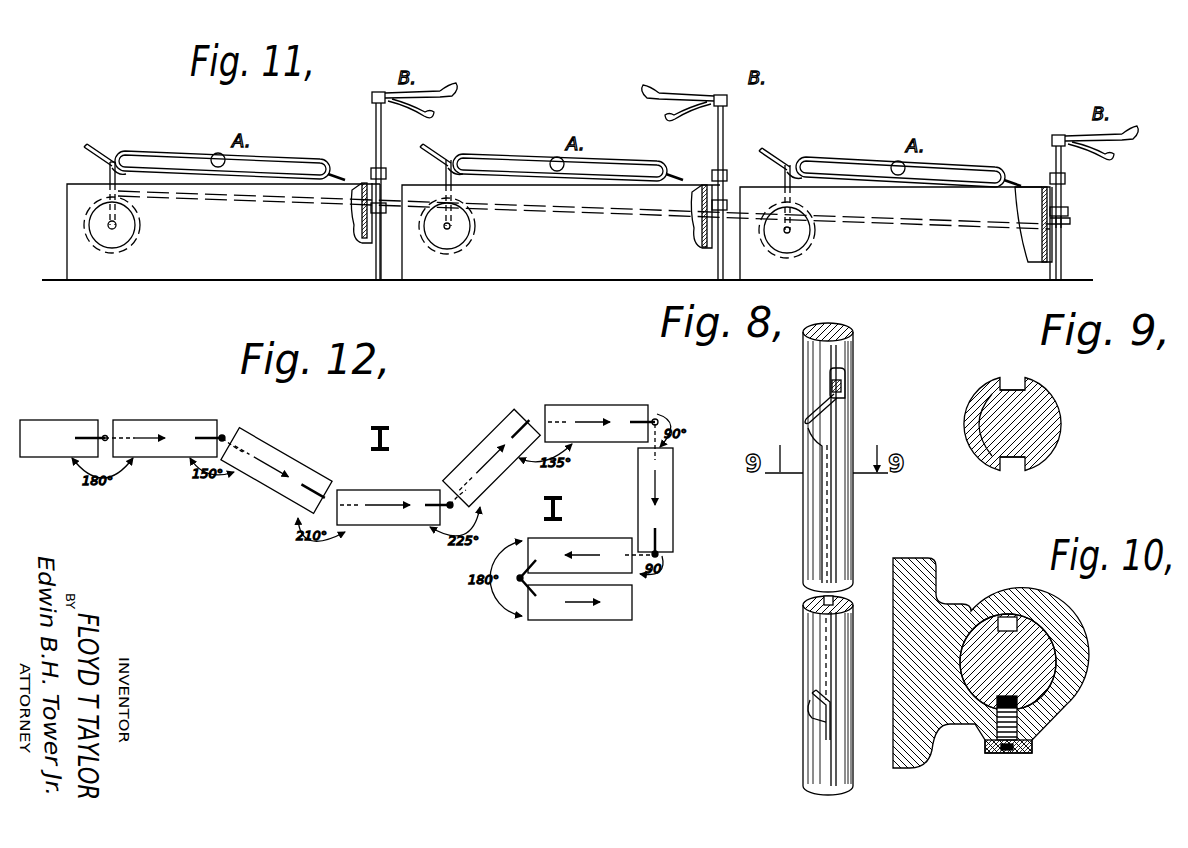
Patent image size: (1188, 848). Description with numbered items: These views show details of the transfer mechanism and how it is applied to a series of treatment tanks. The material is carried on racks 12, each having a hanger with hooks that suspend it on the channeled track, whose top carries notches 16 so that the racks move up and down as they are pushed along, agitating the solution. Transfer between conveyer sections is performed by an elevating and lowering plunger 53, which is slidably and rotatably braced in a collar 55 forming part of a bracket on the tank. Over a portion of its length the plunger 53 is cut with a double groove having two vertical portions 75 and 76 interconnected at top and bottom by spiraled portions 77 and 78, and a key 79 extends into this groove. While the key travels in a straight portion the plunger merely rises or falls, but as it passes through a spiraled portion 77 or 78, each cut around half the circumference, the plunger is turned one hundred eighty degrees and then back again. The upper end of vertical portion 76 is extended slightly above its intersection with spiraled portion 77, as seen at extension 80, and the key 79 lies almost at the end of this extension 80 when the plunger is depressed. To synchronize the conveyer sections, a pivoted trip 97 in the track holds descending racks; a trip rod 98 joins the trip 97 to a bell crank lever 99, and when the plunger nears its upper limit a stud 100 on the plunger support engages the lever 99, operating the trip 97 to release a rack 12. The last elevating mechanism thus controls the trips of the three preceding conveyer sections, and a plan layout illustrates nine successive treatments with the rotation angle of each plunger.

In FIG. 11, the rack 12 is at (108, 172).
In FIG. 11, the pivoted trip 97 is at (115, 163).
In FIG. 11, the trip rod 98 is at (572, 214).
In FIG. 11, the bell crank lever 99 is at (1068, 211).
In FIG. 11, the stud 100 is at (1066, 224).
In FIG. 8, the elevating and lowering plunger 53 is at (853, 548).
In FIG. 9, the elevating and lowering plunger 53 is at (1060, 437).
In FIG. 10, the elevating and lowering plunger 53 is at (1050, 652).
In FIG. 8, the vertical portion of groove 75 is at (818, 493).
In FIG. 9, the vertical portion of groove 75 is at (1012, 462).
In FIG. 9, the vertical portion of groove 76 is at (1009, 386).
In FIG. 8, the spiraled portion of groove 77 is at (808, 417).
In FIG. 8, the spiraled portion of groove 78 is at (820, 718).
In FIG. 8, the key 79 is at (842, 388).
In FIG. 10, the key 79 is at (1034, 722).
In FIG. 8, the extension 80 is at (847, 376).
In FIG. 8, the notches 16 is at (840, 425).
In FIG. 10, the collar 55 is at (1080, 686).